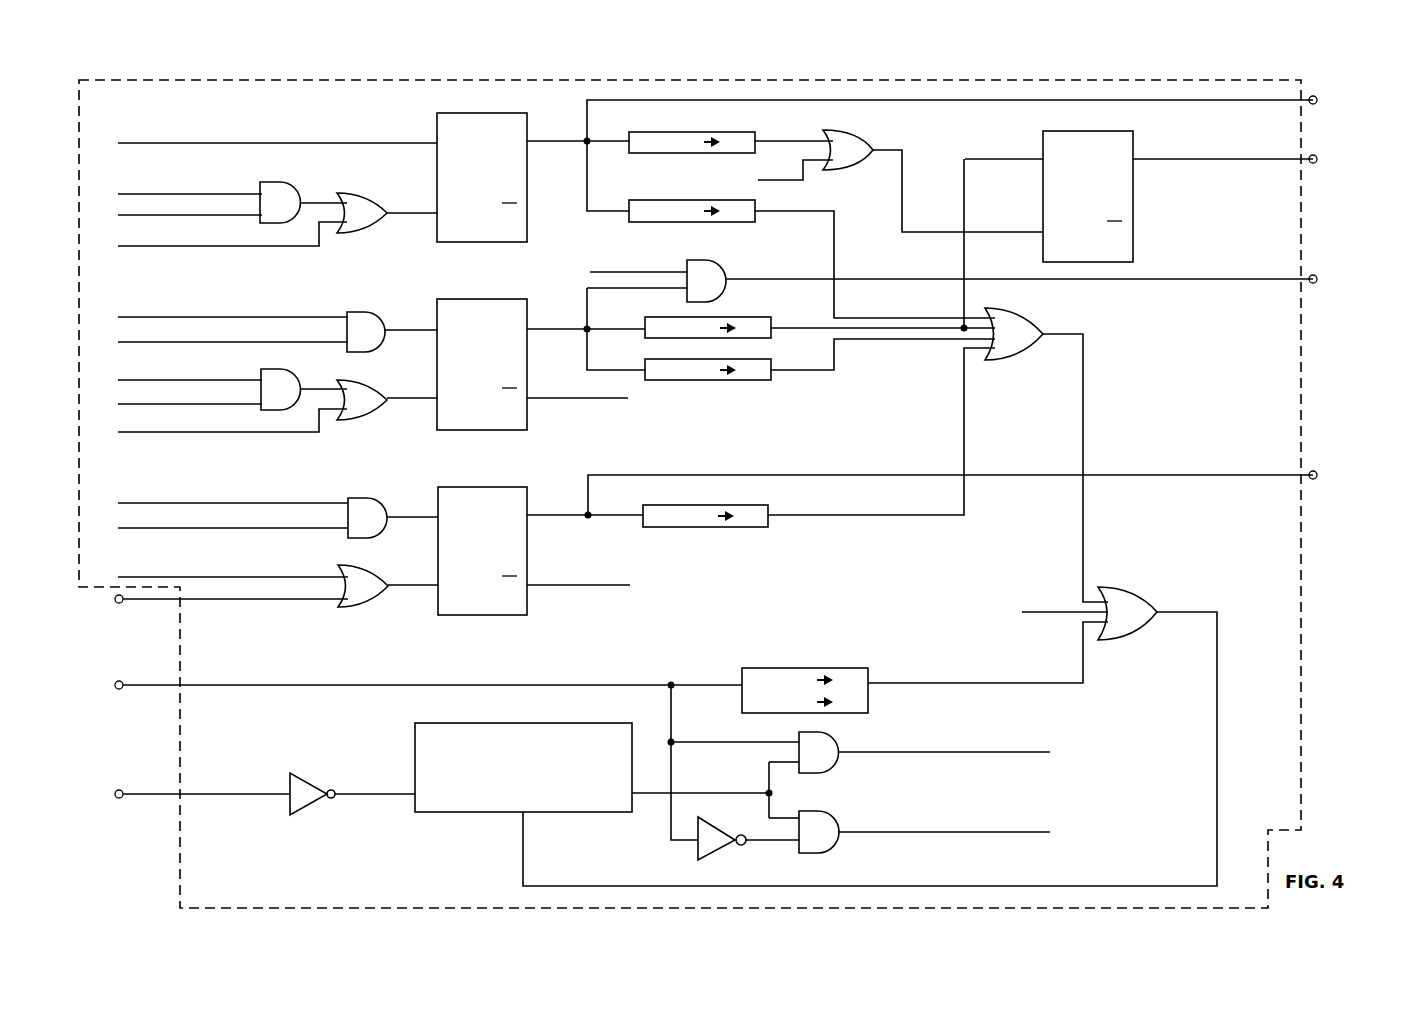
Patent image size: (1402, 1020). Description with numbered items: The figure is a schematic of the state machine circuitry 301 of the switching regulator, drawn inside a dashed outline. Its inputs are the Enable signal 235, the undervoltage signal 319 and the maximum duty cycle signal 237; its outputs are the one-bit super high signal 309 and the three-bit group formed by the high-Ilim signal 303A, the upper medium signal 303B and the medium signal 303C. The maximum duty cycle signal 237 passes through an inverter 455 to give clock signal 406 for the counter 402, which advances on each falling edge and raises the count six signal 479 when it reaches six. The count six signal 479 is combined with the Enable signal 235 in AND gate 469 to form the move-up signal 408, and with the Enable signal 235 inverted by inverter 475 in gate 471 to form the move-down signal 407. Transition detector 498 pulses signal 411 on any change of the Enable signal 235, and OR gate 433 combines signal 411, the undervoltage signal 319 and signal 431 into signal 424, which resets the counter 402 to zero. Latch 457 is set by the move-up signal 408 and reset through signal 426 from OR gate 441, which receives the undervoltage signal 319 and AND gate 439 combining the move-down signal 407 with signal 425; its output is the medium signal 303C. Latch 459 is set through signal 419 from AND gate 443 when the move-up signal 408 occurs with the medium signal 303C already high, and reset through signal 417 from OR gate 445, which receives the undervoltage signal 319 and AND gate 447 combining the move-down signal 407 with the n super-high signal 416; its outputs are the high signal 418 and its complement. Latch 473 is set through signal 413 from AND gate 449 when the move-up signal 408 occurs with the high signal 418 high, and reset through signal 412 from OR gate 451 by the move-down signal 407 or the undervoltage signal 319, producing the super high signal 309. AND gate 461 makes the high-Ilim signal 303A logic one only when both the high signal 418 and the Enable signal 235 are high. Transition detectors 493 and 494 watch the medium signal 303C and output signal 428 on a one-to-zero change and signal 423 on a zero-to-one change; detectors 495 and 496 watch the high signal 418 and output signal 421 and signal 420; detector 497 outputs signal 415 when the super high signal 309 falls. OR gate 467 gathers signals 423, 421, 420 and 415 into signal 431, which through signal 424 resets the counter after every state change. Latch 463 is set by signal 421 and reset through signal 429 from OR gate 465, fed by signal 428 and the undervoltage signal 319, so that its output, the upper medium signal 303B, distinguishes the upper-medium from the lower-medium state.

The state machine circuitry 301 is at (230, 892).
The high-Ilim signal 303A is at (1320, 280).
The upper medium signal 303B is at (1320, 160).
The medium signal 303C is at (584, 128).
The super high signal 309 is at (1320, 478).
The undervoltage (UV) signal 319 is at (104, 244).
The Enable signal 235 is at (671, 270).
The maximum duty cycle (Dmax) signal 237 is at (129, 809).
The counter 402 is at (406, 742).
The inverted clock signal 406 is at (396, 796).
The move-down signal 407 is at (106, 170).
The move-up signal 408 is at (918, 752).
The transition detector output signal 411 is at (926, 684).
The reset signal of flip-flop 473 412 is at (431, 588).
The set signal of flip-flop 473 413 is at (431, 519).
The super high transition signal 415 is at (838, 516).
The n super-high signal 416 is at (106, 396).
The reset signal of flip-flop 459 417 is at (431, 402).
The high signal 418 is at (99, 515).
The set signal of flip-flop 459 419 is at (431, 335).
The high signal rising transition signal 420 is at (823, 372).
The high signal falling transition signal 421 is at (823, 330).
The medium signal rising transition signal 423 is at (795, 215).
The counter reset signal 424 is at (1190, 614).
The high signal 425 is at (106, 206).
The reset signal of flip-flop 457 426 is at (430, 213).
The medium signal falling transition signal 428 is at (816, 141).
The reset signal of flip-flop 463 429 is at (948, 232).
The transition OR signal 431 is at (1073, 328).
The OR gate 433 is at (1122, 588).
The AND gate 439 is at (280, 184).
The OR gate 441 is at (358, 192).
The AND gate 443 is at (365, 312).
The OR gate 445 is at (361, 391).
The AND gate 447 is at (280, 372).
The AND gate 449 is at (365, 499).
The OR gate 451 is at (360, 572).
The inverter 455 is at (316, 779).
The latch 457 is at (473, 112).
The latch 459 is at (475, 299).
The AND gate 461 is at (720, 258).
The latch 463 is at (1078, 132).
The OR gate 465 is at (854, 136).
The OR gate 467 is at (1008, 308).
The AND gate 469 is at (840, 740).
The gate 471 is at (840, 820).
The latch 473 is at (475, 487).
The inverter 475 is at (728, 824).
The count 6 signal 479 is at (740, 794).
The 1-to-0 transition detector 493 is at (674, 132).
The 0-to-1 transition detector 494 is at (674, 201).
The 1-to-0 transition detector 495 is at (688, 318).
The 0-to-1 transition detector 496 is at (688, 360).
The 1-to-0 transition detector 497 is at (688, 507).
The transition detector 498 is at (768, 667).